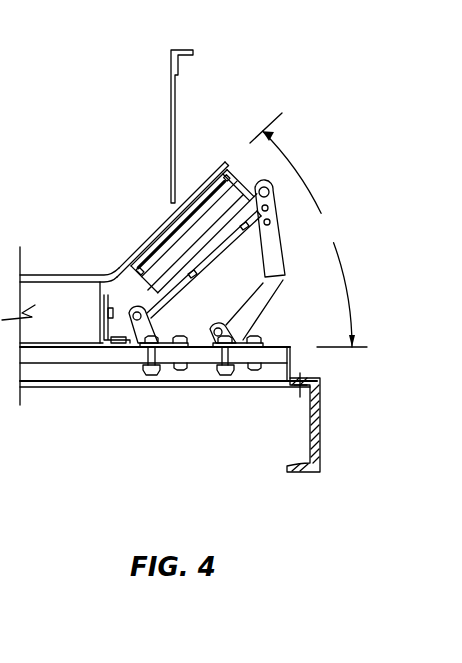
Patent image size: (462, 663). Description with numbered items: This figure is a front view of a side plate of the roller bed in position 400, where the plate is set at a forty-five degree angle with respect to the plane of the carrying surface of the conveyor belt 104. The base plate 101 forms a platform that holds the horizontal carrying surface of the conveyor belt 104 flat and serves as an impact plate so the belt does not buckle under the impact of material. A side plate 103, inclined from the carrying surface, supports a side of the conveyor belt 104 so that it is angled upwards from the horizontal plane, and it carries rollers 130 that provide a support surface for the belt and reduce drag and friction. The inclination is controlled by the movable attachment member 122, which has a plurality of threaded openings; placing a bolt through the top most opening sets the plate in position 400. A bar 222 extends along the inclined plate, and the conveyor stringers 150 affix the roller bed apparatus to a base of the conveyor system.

The position 400 is at (67, 132).
The rollers 130 is at (185, 206).
The bar 222 is at (193, 263).
The conveyor belt 104 is at (74, 274).
The second side plate 103 is at (205, 272).
The movable attachment member 122 is at (272, 252).
The base plate 101 is at (73, 358).
The conveyor stringers 150 is at (309, 435).